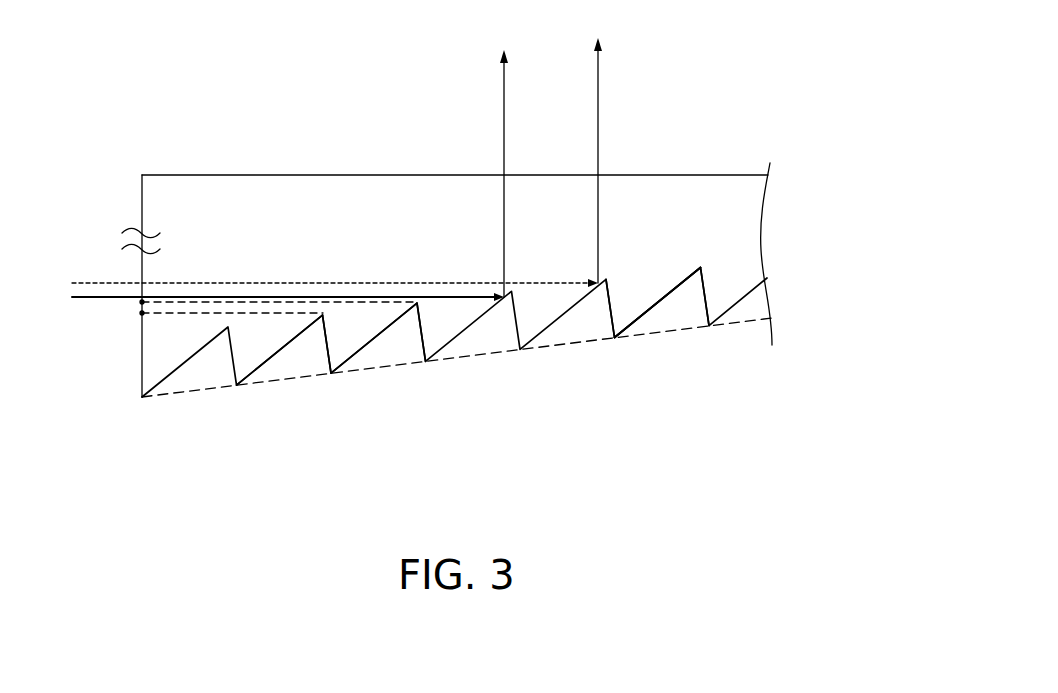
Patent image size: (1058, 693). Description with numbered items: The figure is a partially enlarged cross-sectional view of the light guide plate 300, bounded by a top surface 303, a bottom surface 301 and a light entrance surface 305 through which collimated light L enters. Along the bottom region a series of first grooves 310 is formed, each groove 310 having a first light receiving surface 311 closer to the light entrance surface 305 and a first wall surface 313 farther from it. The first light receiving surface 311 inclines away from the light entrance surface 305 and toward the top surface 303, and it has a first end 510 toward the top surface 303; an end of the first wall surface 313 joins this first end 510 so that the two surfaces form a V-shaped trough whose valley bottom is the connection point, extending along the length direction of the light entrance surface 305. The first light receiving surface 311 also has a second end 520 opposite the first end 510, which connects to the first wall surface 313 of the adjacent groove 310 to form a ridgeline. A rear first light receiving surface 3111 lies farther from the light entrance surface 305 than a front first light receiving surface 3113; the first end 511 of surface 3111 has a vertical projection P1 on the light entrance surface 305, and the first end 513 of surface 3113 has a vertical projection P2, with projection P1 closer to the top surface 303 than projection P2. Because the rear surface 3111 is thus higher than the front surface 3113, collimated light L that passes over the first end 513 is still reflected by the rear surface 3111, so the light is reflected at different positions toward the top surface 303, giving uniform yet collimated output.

The light guide plate 300 is at (157, 85).
The bottom surface 301 is at (746, 318).
The top surface 303 is at (180, 175).
The light entrance surface 305 is at (142, 215).
The first groove 310 is at (682, 323).
The first light receiving surface 311 is at (657, 305).
The first wall surface 313 is at (703, 324).
The first light receiving surface 3111 is at (378, 338).
The first light receiving surface 3113 is at (283, 350).
The first end 510 is at (702, 268).
The first end 511 is at (417, 302).
The first end 513 is at (323, 313).
The second end 520 is at (617, 336).
The collimated light L is at (328, 172).
The vertical projection P1 is at (140, 302).
The vertical projection P2 is at (140, 313).